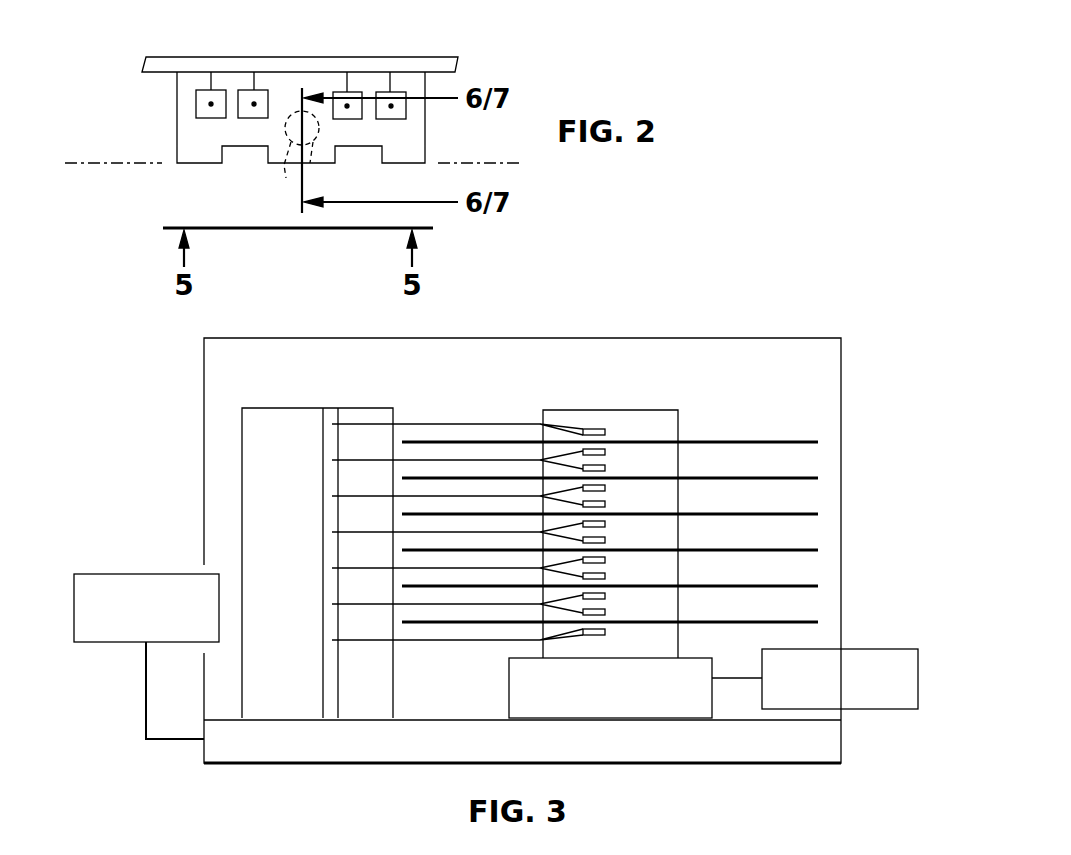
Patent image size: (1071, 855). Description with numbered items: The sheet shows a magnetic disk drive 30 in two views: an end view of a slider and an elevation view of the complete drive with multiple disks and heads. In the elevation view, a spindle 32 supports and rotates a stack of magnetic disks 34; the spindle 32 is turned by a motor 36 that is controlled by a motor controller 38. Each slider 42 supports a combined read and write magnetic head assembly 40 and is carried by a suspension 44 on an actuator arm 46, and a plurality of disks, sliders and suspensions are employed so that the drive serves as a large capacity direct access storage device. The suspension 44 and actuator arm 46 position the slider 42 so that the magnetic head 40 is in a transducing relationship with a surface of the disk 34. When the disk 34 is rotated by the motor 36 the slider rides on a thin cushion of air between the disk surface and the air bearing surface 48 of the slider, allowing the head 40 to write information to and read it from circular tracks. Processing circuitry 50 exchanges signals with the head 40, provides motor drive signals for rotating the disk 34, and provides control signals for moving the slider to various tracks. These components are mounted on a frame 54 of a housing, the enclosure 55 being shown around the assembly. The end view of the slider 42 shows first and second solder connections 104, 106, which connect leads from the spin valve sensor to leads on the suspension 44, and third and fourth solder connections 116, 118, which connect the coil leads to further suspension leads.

In FIG. 2, the first solder connection 104 is at (189, 90).
In FIG. 2, the third solder connection 116 is at (233, 90).
In FIG. 2, the fourth solder connection 118 is at (327, 91).
In FIG. 2, the second solder connection 106 is at (372, 91).
In FIG. 2, the slider 42 is at (177, 103).
In FIG. 3, the slider 42 is at (607, 452).
In FIG. 2, the air bearing surface 48 is at (92, 166).
In FIG. 2, the magnetic head assembly 40 is at (287, 174).
In FIG. 3, the disc drive housing 55 is at (778, 338).
In FIG. 3, the magnetic disk drive 30 is at (733, 409).
In FIG. 3, the actuator arm 46 is at (508, 460).
In FIG. 3, the suspension 44 is at (578, 460).
In FIG. 3, the spindle 32 is at (668, 410).
In FIG. 3, the magnetic disk 34 is at (818, 443).
In FIG. 3, the motor 36 is at (599, 701).
In FIG. 3, the motor controller 38 is at (877, 710).
In FIG. 3, the processing circuitry 50 is at (120, 574).
In FIG. 3, the frame 54 is at (258, 764).